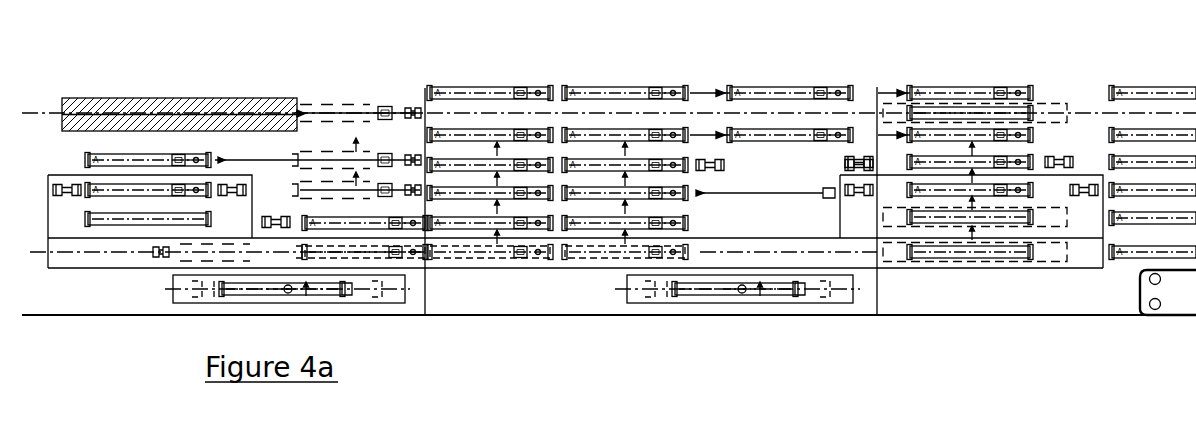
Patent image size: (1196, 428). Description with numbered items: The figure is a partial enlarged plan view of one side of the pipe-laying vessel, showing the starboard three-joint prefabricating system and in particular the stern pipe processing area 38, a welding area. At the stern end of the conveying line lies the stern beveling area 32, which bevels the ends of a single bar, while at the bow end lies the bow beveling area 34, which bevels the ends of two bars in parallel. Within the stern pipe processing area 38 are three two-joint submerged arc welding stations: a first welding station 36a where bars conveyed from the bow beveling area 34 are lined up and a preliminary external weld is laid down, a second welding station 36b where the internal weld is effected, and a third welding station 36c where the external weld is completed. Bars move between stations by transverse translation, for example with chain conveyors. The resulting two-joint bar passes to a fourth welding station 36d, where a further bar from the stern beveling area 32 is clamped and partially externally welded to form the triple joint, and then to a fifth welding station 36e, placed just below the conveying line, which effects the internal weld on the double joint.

The stern beveling area 32 is at (110, 245).
The bow beveling area 34 is at (998, 268).
The first welding station 36a is at (556, 133).
The second welding station 36b is at (556, 163).
The third welding station 36c is at (556, 191).
The fourth welding station 36d is at (556, 221).
The fifth welding station 36e is at (556, 249).
The stern pipe processing area 38 is at (683, 70).